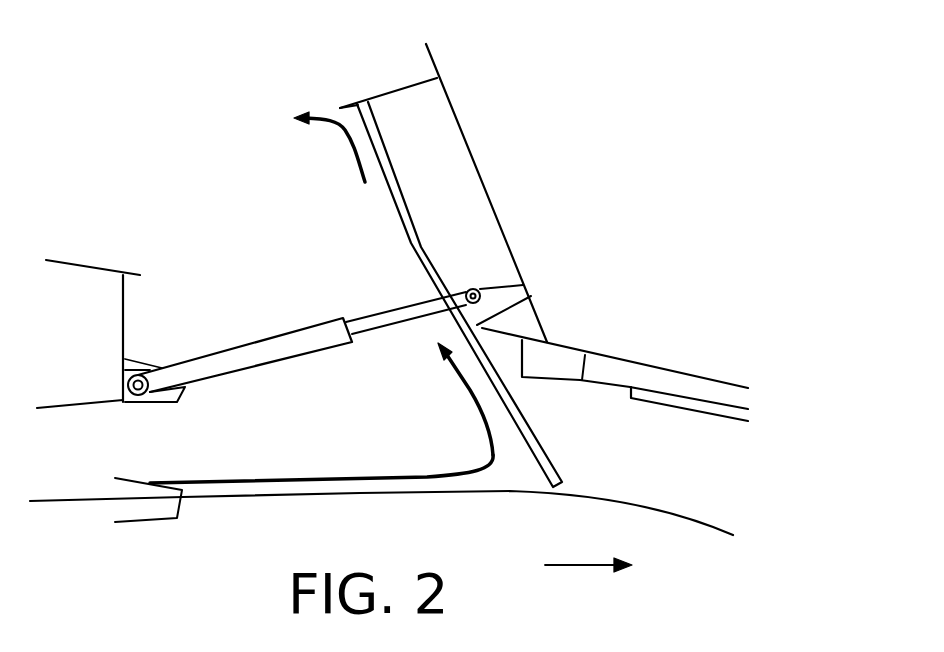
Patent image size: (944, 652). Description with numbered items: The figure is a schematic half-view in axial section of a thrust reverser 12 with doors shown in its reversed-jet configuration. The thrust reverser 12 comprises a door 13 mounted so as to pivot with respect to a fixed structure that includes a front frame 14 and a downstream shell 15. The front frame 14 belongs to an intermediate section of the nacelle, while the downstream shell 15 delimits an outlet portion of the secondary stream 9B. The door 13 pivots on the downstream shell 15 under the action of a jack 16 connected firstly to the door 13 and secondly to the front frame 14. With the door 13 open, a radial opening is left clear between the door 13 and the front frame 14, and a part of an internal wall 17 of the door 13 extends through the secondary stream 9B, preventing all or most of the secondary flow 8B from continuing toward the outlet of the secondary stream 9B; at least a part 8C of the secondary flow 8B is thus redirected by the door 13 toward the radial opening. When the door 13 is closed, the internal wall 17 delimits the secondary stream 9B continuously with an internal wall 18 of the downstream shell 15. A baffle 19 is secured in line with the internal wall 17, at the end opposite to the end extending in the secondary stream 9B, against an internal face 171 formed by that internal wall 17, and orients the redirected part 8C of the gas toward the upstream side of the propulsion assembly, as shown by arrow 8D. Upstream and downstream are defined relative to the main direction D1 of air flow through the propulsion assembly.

The secondary flow 8B is at (247, 480).
The part of the secondary flow 8C is at (452, 373).
The arrow 8D is at (320, 113).
The secondary stream 9B is at (368, 458).
The thrust reverser 12 is at (578, 225).
The door 13 is at (460, 120).
The front frame 14 is at (85, 266).
The downstream shell 15 is at (638, 360).
The jack 16 is at (248, 352).
The internal wall 17 is at (396, 190).
The internal wall 18 is at (717, 415).
The baffle 19 is at (347, 100).
The internal face 171 is at (420, 270).
The main direction D1 is at (583, 563).